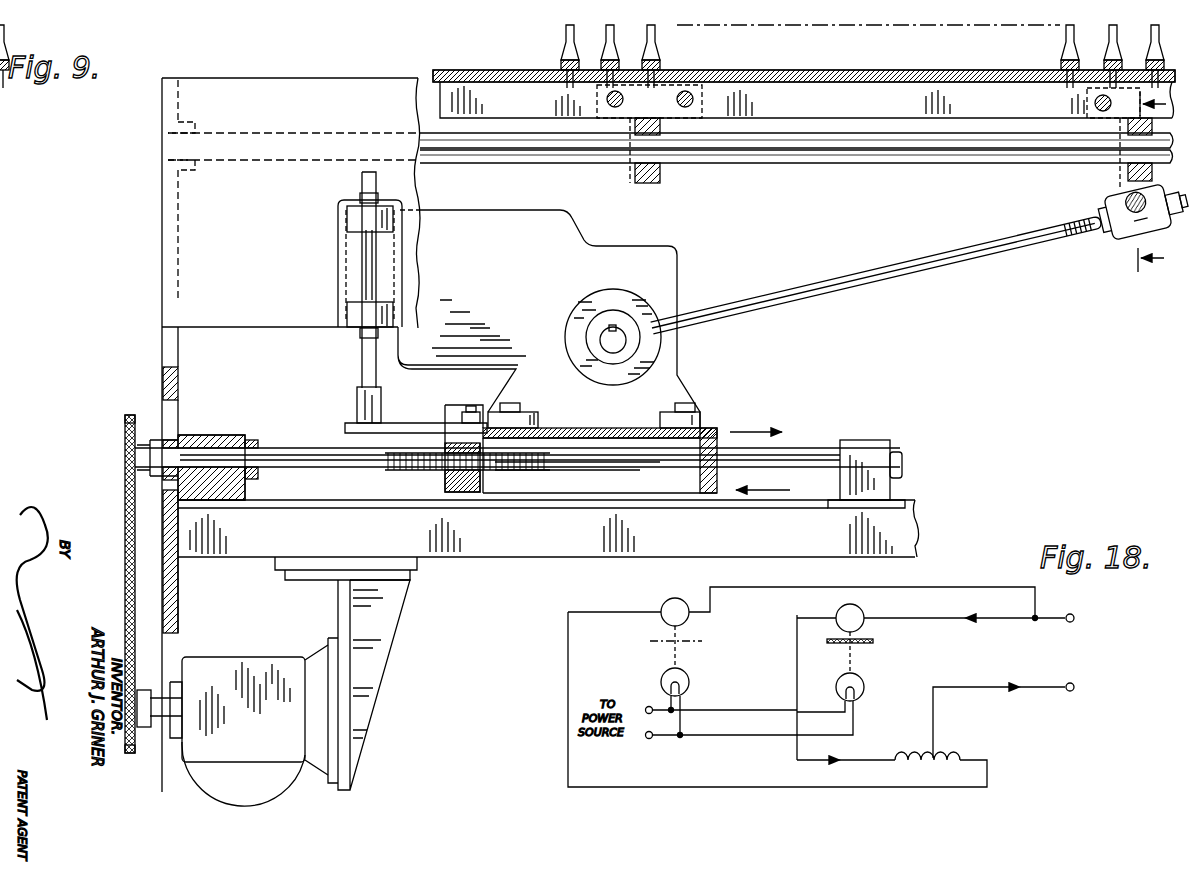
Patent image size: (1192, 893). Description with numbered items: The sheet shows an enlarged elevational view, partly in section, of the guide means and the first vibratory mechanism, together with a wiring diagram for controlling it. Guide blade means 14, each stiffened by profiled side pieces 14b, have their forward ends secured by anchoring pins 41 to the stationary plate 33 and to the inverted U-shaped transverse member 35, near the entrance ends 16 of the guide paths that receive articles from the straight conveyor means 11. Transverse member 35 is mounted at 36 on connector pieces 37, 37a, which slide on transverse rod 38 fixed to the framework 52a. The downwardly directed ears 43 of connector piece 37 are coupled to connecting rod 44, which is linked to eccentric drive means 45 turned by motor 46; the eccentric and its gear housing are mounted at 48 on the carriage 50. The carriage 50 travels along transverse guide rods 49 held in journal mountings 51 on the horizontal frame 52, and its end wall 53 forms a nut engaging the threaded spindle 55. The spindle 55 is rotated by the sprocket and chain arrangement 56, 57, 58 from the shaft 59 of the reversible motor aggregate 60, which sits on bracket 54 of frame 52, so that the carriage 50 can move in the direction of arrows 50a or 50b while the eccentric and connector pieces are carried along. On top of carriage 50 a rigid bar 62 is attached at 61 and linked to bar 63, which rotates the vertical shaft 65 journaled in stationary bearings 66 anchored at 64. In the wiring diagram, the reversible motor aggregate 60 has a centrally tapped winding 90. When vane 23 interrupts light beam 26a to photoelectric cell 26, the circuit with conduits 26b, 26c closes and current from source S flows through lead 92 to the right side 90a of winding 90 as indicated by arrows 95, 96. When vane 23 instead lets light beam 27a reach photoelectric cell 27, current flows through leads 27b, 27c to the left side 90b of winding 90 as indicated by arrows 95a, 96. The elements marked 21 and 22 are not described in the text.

In FIG. 9, the guide blade means 14 is at (574, 34).
In FIG. 9, the profiled side pieces 14b is at (560, 64).
In FIG. 9, the entrance ends 16 is at (1089, 68).
In FIG. 9, the stationary plate 33 is at (850, 76).
In FIG. 9, the inverted U-shaped transverse member 35 is at (854, 86).
In FIG. 9, the mounting 36 is at (750, 116).
In FIG. 9, the anchoring pins 41 is at (1083, 88).
In FIG. 9, the connector piece 37 is at (1124, 172).
In FIG. 9, the connector piece 37a is at (644, 186).
In FIG. 9, the transverse rod 38 is at (804, 162).
In FIG. 9, the downwardly directed ears 43 is at (1118, 200).
In FIG. 9, the connecting rod 44 is at (870, 250).
In FIG. 9, the eccentric drive means 45 is at (642, 296).
In FIG. 9, the motor 46 is at (502, 219).
In FIG. 9, the mounting 48 is at (510, 410).
In FIG. 9, the transverse guide rods 49 is at (804, 446).
In FIG. 9, the carriage 50 is at (581, 449).
In FIG. 9, the arrow 50a is at (749, 430).
In FIG. 9, the arrow 50b is at (760, 496).
In FIG. 9, the journal mountings 51 is at (220, 438).
In FIG. 9, the horizontal frame 52 is at (370, 554).
In FIG. 9, the framework 52a is at (190, 228).
In FIG. 9, the end wall 53 is at (468, 492).
In FIG. 9, the bracket 54 is at (340, 728).
In FIG. 9, the threaded spindle 55 is at (414, 490).
In FIG. 9, the sprocket and chain arrangement 56 is at (136, 414).
In FIG. 9, the sprocket and chain arrangement 57 is at (128, 754).
In FIG. 9, the sprocket and chain arrangement 58 is at (123, 518).
In FIG. 9, the shaft 59 is at (170, 710).
In FIG. 9, the reversible motor aggregate 60 is at (246, 768).
In FIG. 18, the reversible motor aggregate 60 is at (920, 738).
In FIG. 9, the attachment 61 is at (474, 408).
In FIG. 9, the rigid bar 62 is at (408, 421).
In FIG. 9, the bar 63 is at (356, 414).
In FIG. 9, the anchorage 64 is at (402, 256).
In FIG. 9, the vertical shaft 65 is at (360, 256).
In FIG. 9, the stationary bearings 66 is at (348, 218).
In FIG. 9, the straight conveyor means 11 is at (1137, 182).
In FIG. 18, the relay 21 is at (690, 690).
In FIG. 18, the relay 22 is at (864, 692).
In FIG. 18, the vane 23 is at (648, 640).
In FIG. 18, the photoelectric cell 26 is at (674, 606).
In FIG. 18, the light beam 26a is at (680, 662).
In FIG. 18, the conduit 26b is at (716, 606).
In FIG. 18, the conduit 26c is at (574, 678).
In FIG. 18, the photoelectric cell 27 is at (860, 604).
In FIG. 18, the light beam 27a is at (856, 668).
In FIG. 18, the lead 27b is at (942, 616).
In FIG. 18, the lead 27c is at (796, 688).
In FIG. 18, the centrally tapped winding 90 is at (924, 768).
In FIG. 18, the right side of motor winding 90a is at (952, 756).
In FIG. 18, the left side of motor winding 90b is at (902, 752).
In FIG. 18, the lead 92 is at (968, 686).
In FIG. 18, the arrow 95 is at (986, 588).
In FIG. 18, the arrow 95a is at (960, 624).
In FIG. 18, the arrow 96 is at (1020, 686).
In FIG. 18, the source S is at (1064, 653).